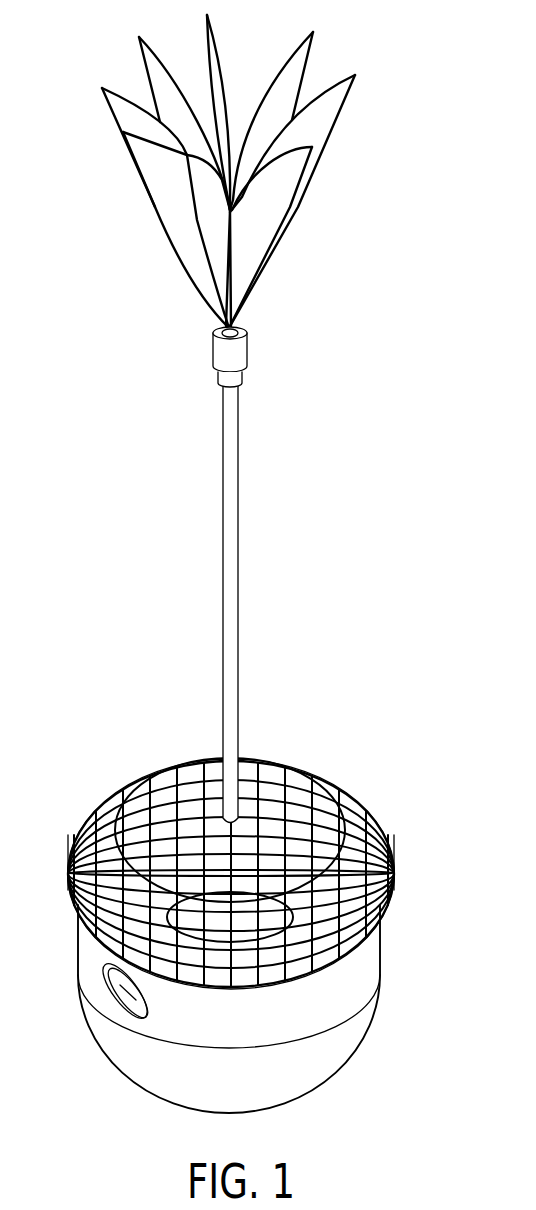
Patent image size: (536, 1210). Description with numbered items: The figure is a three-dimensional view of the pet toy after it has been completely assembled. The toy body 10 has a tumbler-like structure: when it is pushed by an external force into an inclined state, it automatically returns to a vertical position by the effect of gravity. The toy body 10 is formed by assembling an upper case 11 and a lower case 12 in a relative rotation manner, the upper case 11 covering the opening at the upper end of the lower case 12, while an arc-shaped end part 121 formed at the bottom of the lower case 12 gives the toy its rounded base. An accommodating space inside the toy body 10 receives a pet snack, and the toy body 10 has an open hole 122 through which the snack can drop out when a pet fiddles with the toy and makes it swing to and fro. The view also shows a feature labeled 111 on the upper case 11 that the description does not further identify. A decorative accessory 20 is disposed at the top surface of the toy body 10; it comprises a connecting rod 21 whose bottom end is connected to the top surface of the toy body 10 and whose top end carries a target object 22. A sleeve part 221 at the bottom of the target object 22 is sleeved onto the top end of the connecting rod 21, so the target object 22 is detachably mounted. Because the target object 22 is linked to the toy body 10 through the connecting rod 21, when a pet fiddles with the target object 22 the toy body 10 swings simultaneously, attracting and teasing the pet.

The toy body 10 is at (232, 902).
The upper case 11 is at (370, 842).
The mesh wall 111 is at (133, 992).
The lower case 12 is at (232, 1009).
The arc-shaped end part 121 is at (335, 1060).
The open hole 122 is at (106, 993).
The decorative accessory 20 is at (259, 419).
The connecting rod 21 is at (231, 522).
The target object 22 is at (283, 196).
The sleeve part 221 is at (238, 352).